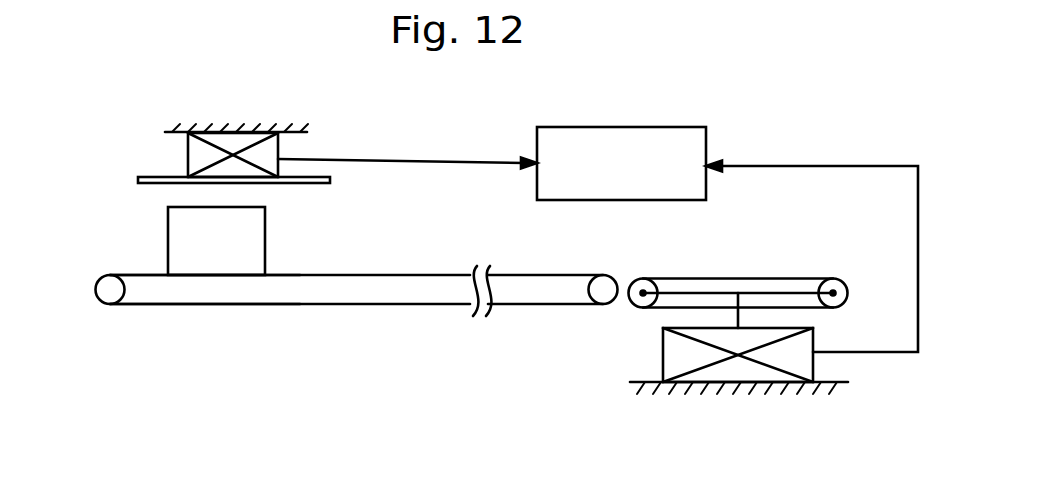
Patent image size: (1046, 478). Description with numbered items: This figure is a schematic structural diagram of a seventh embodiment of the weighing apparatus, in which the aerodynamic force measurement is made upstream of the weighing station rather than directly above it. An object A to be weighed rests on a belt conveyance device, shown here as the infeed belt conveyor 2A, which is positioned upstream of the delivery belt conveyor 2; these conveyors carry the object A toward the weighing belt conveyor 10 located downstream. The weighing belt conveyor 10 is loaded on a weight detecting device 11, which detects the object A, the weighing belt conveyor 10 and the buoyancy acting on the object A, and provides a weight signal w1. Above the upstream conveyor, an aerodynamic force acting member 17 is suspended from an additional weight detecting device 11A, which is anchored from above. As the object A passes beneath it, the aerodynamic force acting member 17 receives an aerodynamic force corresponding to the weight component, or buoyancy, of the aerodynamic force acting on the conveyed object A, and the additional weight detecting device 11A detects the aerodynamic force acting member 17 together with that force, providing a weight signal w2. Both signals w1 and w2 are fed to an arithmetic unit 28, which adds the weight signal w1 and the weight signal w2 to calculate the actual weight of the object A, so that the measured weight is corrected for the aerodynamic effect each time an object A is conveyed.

The delivery belt conveyor 2 is at (515, 305).
The infeed belt conveyor 2A is at (282, 304).
The object to be weighed A is at (168, 233).
The additional weight detecting device 11A is at (188, 153).
The aerodynamic force acting member 17 is at (138, 180).
The weight signal w2 is at (363, 160).
The arithmetic unit 28 is at (652, 127).
The weight signal w1 is at (798, 166).
The weighing belt conveyor 10 is at (790, 278).
The weight detecting device 11 is at (663, 350).